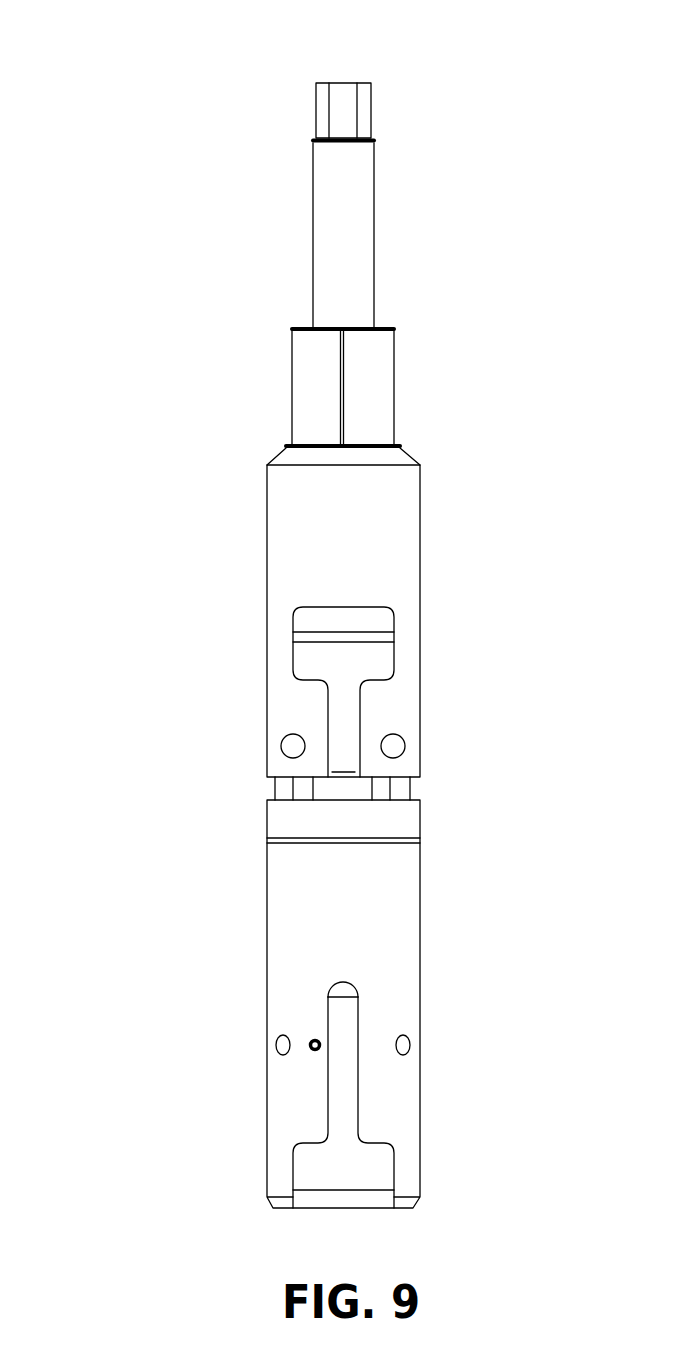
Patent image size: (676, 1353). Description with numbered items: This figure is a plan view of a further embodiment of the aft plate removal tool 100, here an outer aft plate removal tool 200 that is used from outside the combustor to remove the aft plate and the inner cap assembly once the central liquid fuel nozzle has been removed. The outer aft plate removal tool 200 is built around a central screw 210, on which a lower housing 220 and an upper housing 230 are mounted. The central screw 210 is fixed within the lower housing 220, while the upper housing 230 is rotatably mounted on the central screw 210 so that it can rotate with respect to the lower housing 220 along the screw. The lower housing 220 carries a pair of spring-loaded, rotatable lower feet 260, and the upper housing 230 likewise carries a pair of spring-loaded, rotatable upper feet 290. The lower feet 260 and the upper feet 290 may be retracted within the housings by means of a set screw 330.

The aft plate removal tool 100 is at (308, 634).
The outer aft plate removal tool 200 is at (308, 634).
The central screw 210 is at (373, 232).
The lower housing 220 is at (420, 918).
The upper housing 230 is at (400, 555).
The lower feet 260 is at (358, 1182).
The upper feet 290 is at (383, 660).
The set screw 330 is at (310, 1042).